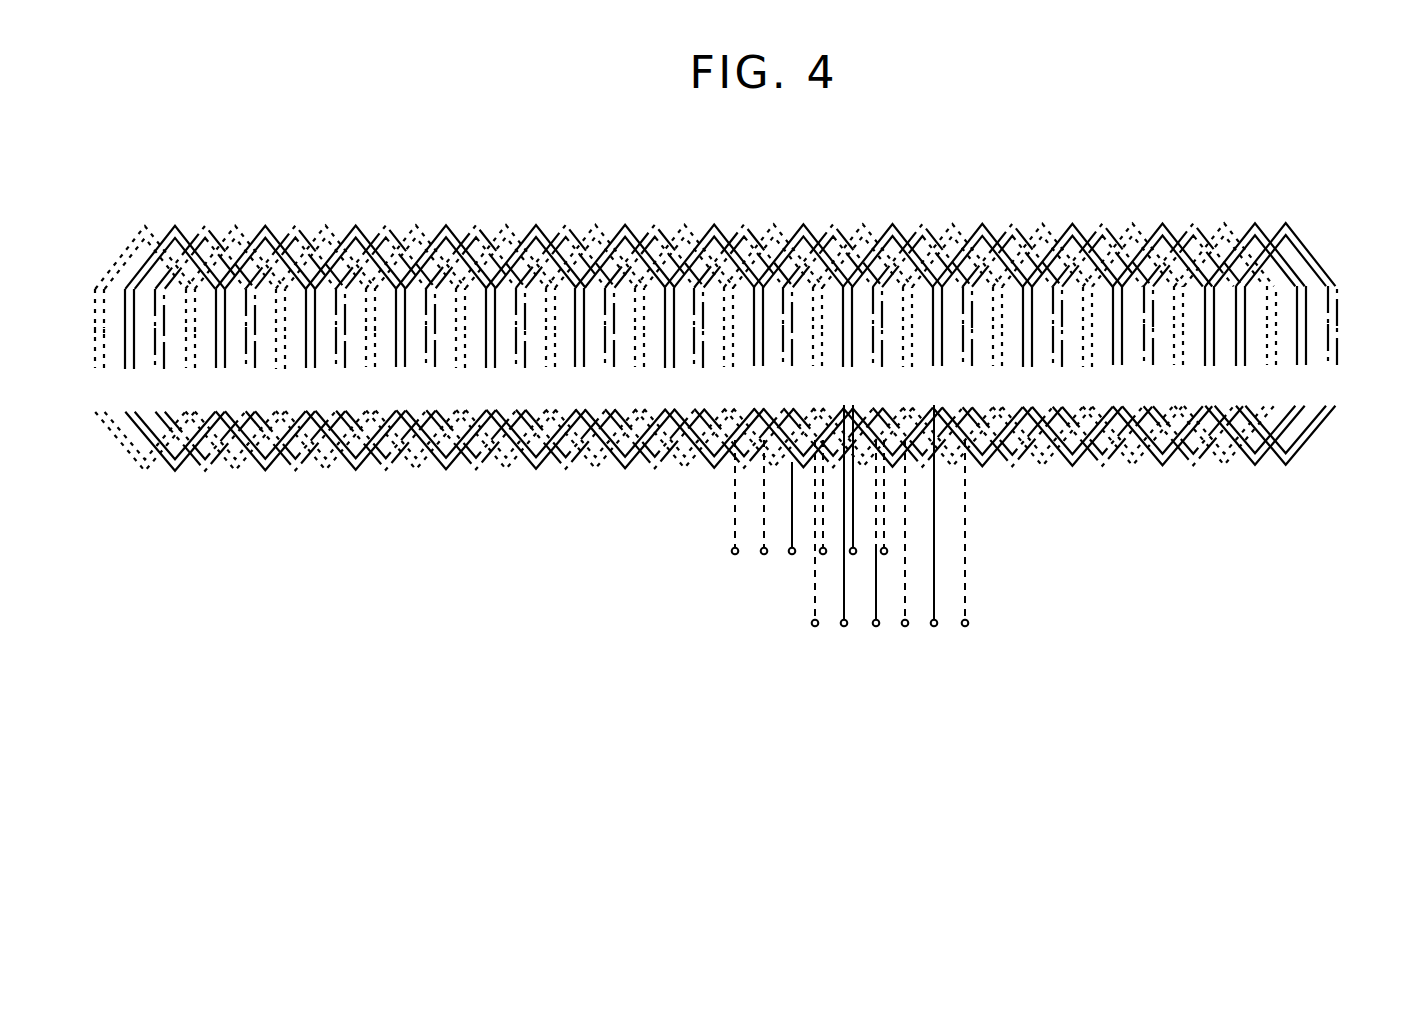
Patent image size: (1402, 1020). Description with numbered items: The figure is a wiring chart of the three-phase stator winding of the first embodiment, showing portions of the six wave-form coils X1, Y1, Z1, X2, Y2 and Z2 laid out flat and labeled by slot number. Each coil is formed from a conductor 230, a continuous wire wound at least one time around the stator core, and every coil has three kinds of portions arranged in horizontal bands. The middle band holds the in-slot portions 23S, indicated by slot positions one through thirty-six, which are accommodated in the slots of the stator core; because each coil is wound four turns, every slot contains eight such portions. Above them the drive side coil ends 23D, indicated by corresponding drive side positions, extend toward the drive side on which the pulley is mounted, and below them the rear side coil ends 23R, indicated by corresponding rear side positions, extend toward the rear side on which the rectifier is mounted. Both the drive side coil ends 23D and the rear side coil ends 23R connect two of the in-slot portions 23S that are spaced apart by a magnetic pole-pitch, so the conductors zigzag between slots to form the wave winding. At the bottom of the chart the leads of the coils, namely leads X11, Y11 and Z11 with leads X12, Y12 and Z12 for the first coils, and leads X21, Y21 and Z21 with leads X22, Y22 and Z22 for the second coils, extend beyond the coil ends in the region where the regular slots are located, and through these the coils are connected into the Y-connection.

The drive side coil ends 23D is at (1343, 213).
The in-slot portions 23S is at (1343, 283).
The rear side coil ends 23R is at (1343, 403).
The conductor 230 is at (690, 524).
The lead Z11 is at (706, 553).
The lead X11 is at (718, 588).
The lead Y11 is at (771, 589).
The lead Z21 is at (826, 553).
The lead X21 is at (856, 553).
The lead Y21 is at (887, 549).
The lead Z12 is at (815, 626).
The lead X12 is at (844, 626).
The lead Y12 is at (876, 626).
The lead Z22 is at (900, 654).
The lead X22 is at (934, 626).
The lead Y22 is at (961, 654).